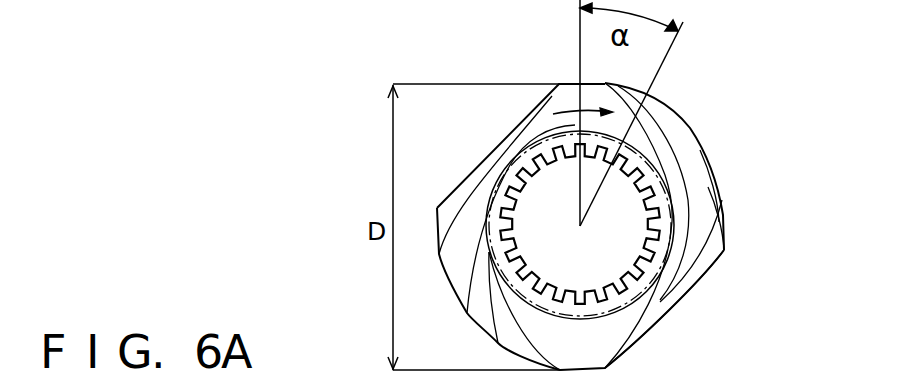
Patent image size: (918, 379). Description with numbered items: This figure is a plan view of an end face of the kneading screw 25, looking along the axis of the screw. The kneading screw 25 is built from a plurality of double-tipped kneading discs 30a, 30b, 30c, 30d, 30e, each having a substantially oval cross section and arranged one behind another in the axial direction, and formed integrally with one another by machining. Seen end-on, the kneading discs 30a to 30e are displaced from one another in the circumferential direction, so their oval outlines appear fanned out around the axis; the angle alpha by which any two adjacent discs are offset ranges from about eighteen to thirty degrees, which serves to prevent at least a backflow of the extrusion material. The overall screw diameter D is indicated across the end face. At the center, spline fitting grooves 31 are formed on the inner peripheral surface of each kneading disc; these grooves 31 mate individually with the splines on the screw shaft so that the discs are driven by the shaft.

The kneading screw 25 is at (675, 305).
The kneading disc 30a is at (638, 124).
The kneading disc 30b is at (655, 128).
The kneading disc 30c is at (700, 151).
The kneading disc 30d is at (708, 187).
The kneading disc 30e is at (717, 240).
The spline fitting grooves 31 is at (600, 300).